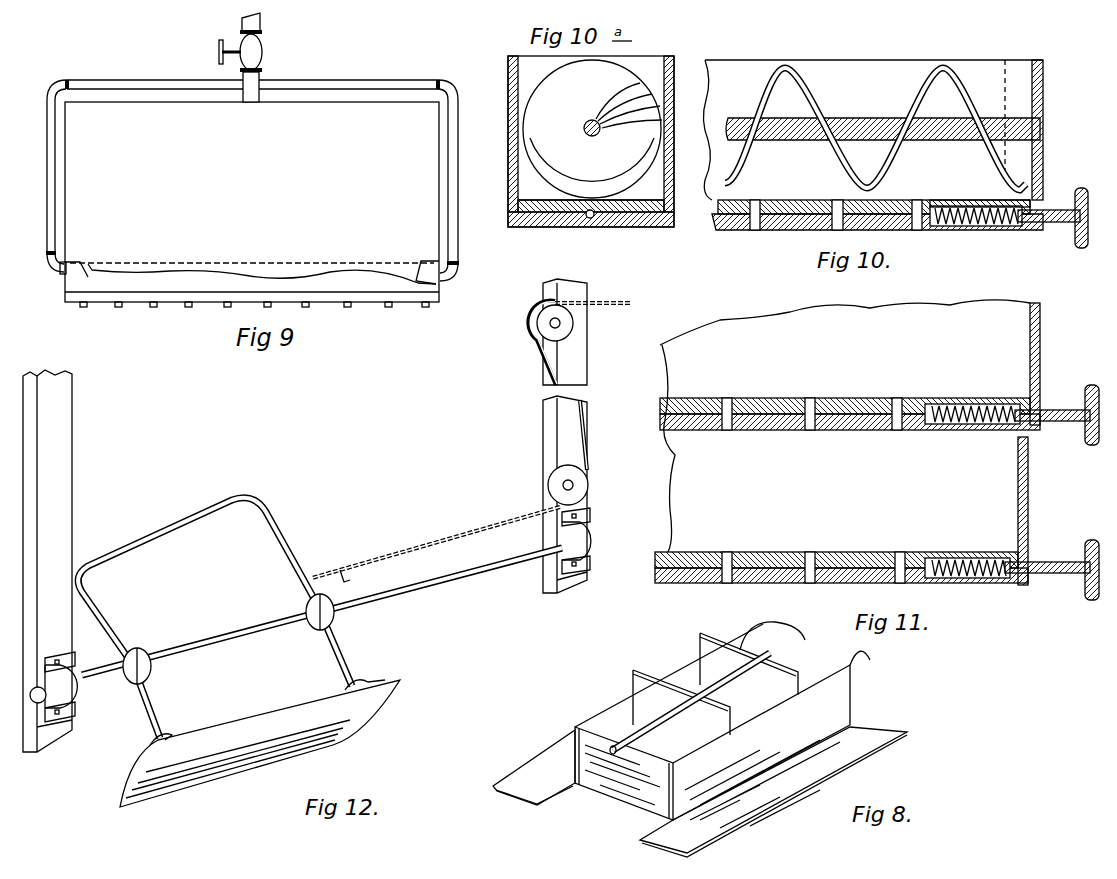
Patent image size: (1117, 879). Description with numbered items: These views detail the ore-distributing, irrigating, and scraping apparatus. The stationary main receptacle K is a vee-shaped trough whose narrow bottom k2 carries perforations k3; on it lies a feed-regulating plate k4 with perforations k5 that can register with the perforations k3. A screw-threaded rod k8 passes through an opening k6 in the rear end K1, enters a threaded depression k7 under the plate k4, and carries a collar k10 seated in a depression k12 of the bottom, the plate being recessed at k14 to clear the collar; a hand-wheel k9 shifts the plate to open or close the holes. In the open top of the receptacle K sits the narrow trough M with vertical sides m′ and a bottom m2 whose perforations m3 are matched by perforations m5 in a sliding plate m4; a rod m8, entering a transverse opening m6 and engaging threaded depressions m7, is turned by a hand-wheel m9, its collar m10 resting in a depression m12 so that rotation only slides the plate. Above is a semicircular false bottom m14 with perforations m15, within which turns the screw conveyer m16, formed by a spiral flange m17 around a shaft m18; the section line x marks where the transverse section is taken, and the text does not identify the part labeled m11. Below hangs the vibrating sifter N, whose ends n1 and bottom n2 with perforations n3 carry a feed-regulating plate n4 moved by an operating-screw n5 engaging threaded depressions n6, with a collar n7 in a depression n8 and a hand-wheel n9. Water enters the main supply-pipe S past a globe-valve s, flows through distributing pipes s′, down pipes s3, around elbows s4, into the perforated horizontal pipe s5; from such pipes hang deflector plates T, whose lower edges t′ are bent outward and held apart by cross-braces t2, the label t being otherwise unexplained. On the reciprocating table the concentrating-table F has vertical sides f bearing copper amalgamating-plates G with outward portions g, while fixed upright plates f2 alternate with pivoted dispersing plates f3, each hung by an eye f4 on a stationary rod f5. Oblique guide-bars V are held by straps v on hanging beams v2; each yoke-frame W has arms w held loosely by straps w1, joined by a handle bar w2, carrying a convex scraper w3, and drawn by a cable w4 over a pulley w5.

In FIG. 9, the main receptacle or trough K is at (252, 202).
In FIG. 11, the main receptacle or trough K is at (845, 426).
In FIG. 9, the material-deflectors T is at (427, 278).
In FIG. 9, the foot t is at (399, 304).
In FIG. 9, the lower edges of deflector plates t′ is at (347, 306).
In FIG. 9, the cross-braces t2 is at (83, 306).
In FIG. 9, the main supply-pipe S is at (259, 57).
In FIG. 9, the globe-valve s is at (212, 60).
In FIG. 9, the water-distributing pipes s′ is at (252, 75).
In FIG. 9, the downwardly extended pipes s3 is at (47, 192).
In FIG. 9, the elbows s4 is at (55, 268).
In FIG. 9, the horizontal pipe s5 is at (62, 275).
In FIG. 10A, the longitudinal trough M is at (508, 137).
In FIG. 10, the longitudinal trough M is at (889, 130).
In FIG. 10A, the vertical sides of trough m′ is at (508, 180).
In FIG. 10A, the bottom of trough m2 is at (630, 226).
In FIG. 10, the bottom of trough m2 is at (786, 224).
In FIG. 10A, the perforations in trough bottom m3 is at (586, 225).
In FIG. 10, the perforations in trough bottom m3 is at (752, 232).
In FIG. 10A, the feed-regulating sliding plate m4 is at (555, 223).
In FIG. 10, the feed-regulating sliding plate m4 is at (722, 232).
In FIG. 10, the perforations in sliding plate m5 is at (770, 200).
In FIG. 10, the transverse opening m6 is at (1044, 208).
In FIG. 11, the transverse opening m6 is at (1040, 390).
In FIG. 10, the threaded depressions m7 is at (960, 226).
In FIG. 10, the screw-threaded rod m8 is at (995, 228).
In FIG. 10, the hand-wheel m9 is at (1088, 176).
In FIG. 10, the circular collar m10 is at (1024, 228).
In FIG. 10, the rod end m11 is at (1062, 226).
In FIG. 10, the depression in trough bottom m12 is at (1016, 230).
In FIG. 10A, the false bottom m14 is at (648, 180).
In FIG. 10, the false bottom m14 is at (960, 200).
In FIG. 10, the perforations in false bottom m15 is at (752, 200).
In FIG. 10A, the screw conveyer m16 is at (530, 98).
In FIG. 10, the screw conveyer m16 is at (800, 90).
In FIG. 10A, the spiral flange m17 is at (596, 104).
In FIG. 10, the spiral flange m17 is at (752, 100).
In FIG. 10A, the shaft of screw conveyer m18 is at (602, 134).
In FIG. 10, the shaft of screw conveyer m18 is at (868, 115).
In FIG. 10, the section line x is at (1003, 48).
In FIG. 11, the rear end of receptacle K1 is at (1040, 330).
In FIG. 11, the bottom of receptacle k2 is at (875, 433).
In FIG. 11, the perforations in receptacle bottom k3 is at (900, 430).
In FIG. 11, the feed-regulating plate k4 is at (860, 398).
In FIG. 11, the perforations in feed-regulating plate k5 is at (905, 398).
In FIG. 11, the opening in rear end k6 is at (1044, 410).
In FIG. 11, the threaded depression k7 is at (956, 404).
In FIG. 11, the screw-threaded rod k8 is at (990, 404).
In FIG. 11, the hand-wheel k9 is at (1092, 384).
In FIG. 11, the collar k10 is at (1020, 432).
In FIG. 11, the depression in receptacle bottom k12 is at (1010, 430).
In FIG. 11, the recess in feed-regulating plate k14 is at (1016, 402).
In FIG. 11, the vibrating trough or sifter N is at (1062, 505).
In FIG. 11, the ends of vibrating trough n1 is at (1028, 472).
In FIG. 11, the bottom of vibrating trough n2 is at (850, 578).
In FIG. 11, the perforations in sifter bottom n3 is at (725, 585).
In FIG. 11, the perforate feed-regulating plate n4 is at (745, 552).
In FIG. 11, the operating-screw n5 is at (1058, 573).
In FIG. 11, the threaded depressions n6 is at (958, 552).
In FIG. 11, the collar n7 is at (1002, 585).
In FIG. 11, the depression n8 is at (1012, 585).
In FIG. 11, the hand-wheel n9 is at (1086, 548).
In FIG. 12, the hanging beams or shaft-hangers v2 is at (72, 476).
In FIG. 12, the straps v is at (86, 696).
In FIG. 12, the guide-bars V is at (440, 592).
In FIG. 12, the straps w1 is at (214, 640).
In FIG. 12, the transverse bars or arms w is at (134, 618).
In FIG. 12, the transverse bar or handle w2 is at (176, 530).
In FIG. 12, the scraper w3 is at (250, 764).
In FIG. 12, the cable w4 is at (430, 546).
In FIG. 12, the pulley w5 is at (575, 326).
In FIG. 12, the slidable yoke-frame W is at (328, 533).
In FIG. 8, the concentrating-table F is at (628, 722).
In FIG. 8, the amalgamating-plates G is at (805, 669).
In FIG. 8, the portion of amalgamating-plate g is at (552, 758).
In FIG. 8, the longitudinal sides of concentrating-table f is at (668, 790).
In FIG. 8, the upright plates f2 is at (640, 672).
In FIG. 8, the material-dispersing pivoted plates f3 is at (700, 666).
In FIG. 8, the eye f4 is at (627, 748).
In FIG. 8, the stationary rod f5 is at (613, 752).